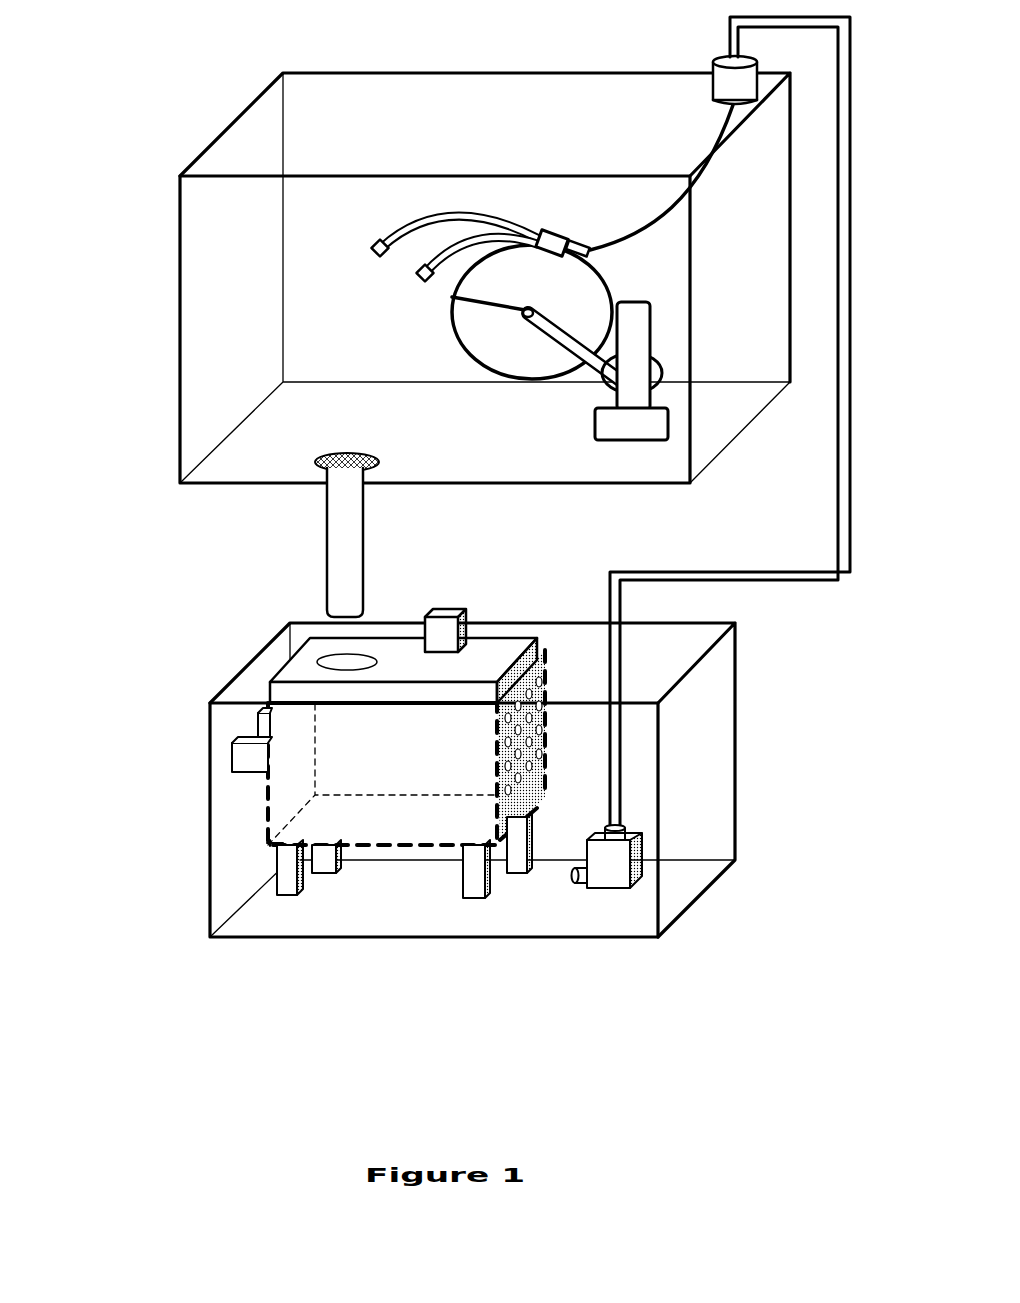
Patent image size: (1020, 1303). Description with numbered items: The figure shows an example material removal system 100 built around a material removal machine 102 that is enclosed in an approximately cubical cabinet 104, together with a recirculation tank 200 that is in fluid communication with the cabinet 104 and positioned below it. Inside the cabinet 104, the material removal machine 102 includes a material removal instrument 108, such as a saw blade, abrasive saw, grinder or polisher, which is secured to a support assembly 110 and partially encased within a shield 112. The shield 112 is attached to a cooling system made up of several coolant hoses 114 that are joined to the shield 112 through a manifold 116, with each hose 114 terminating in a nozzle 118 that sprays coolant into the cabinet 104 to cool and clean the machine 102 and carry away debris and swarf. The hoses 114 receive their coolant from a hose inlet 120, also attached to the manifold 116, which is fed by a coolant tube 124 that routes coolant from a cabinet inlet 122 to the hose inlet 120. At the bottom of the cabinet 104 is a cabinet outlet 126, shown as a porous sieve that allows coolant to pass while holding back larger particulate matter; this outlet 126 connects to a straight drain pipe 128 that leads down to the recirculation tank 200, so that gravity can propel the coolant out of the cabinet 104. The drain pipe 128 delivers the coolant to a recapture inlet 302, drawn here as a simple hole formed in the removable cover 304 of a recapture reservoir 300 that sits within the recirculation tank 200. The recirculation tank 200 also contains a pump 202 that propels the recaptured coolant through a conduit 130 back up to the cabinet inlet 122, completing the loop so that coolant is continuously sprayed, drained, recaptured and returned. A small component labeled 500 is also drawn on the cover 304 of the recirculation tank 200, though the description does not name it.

The material removal system 100 is at (125, 163).
The material removal machine 102 is at (362, 297).
The cabinet 104 is at (178, 330).
The material removal instrument 108 is at (530, 382).
The support assembly 110 is at (665, 373).
The shield 112 is at (472, 307).
The coolant hoses 114 is at (485, 215).
The manifold 116 is at (550, 228).
The nozzle 118 is at (420, 267).
The hose inlet 120 is at (573, 232).
The cabinet inlet 122 is at (790, 77).
The coolant tube 124 is at (720, 170).
The cabinet outlet 126 is at (340, 448).
The drain pipe 128 is at (327, 540).
The conduit 130 is at (845, 553).
The recirculation tank 200 is at (205, 818).
The pump 202 is at (643, 852).
The recapture reservoir 300 is at (258, 797).
The recapture inlet 302 is at (352, 650).
The removable cover 304 is at (270, 660).
The sensor unit 500 is at (437, 613).